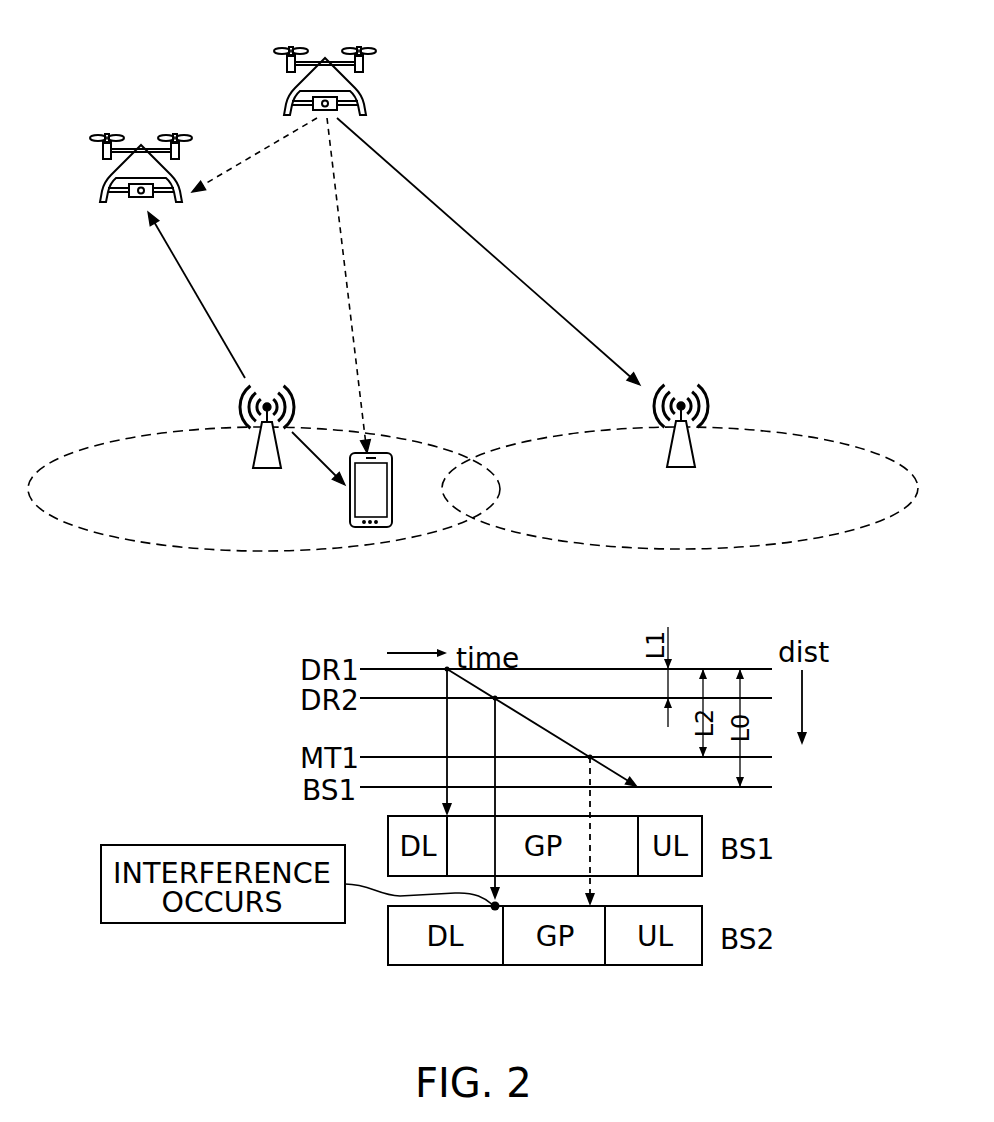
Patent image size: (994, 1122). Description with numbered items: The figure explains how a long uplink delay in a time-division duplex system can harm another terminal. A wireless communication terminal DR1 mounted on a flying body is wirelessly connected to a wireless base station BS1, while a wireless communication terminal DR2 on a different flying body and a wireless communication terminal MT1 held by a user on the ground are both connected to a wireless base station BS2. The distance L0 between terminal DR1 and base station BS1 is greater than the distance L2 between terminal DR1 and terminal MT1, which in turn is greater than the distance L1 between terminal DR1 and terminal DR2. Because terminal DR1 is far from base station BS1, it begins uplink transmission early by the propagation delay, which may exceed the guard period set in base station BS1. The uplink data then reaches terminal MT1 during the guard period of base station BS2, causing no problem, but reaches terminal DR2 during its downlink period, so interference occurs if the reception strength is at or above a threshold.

The wireless communication terminal DR1 is at (325, 61).
The wireless communication terminal DR2 is at (141, 146).
The wireless base station BS1 is at (681, 446).
The wireless base station BS2 is at (257, 449).
The wireless communication terminal MT1 is at (340, 502).
The distance L0 is at (488, 251).
The distance L1 is at (254, 153).
The distance L2 is at (356, 285).